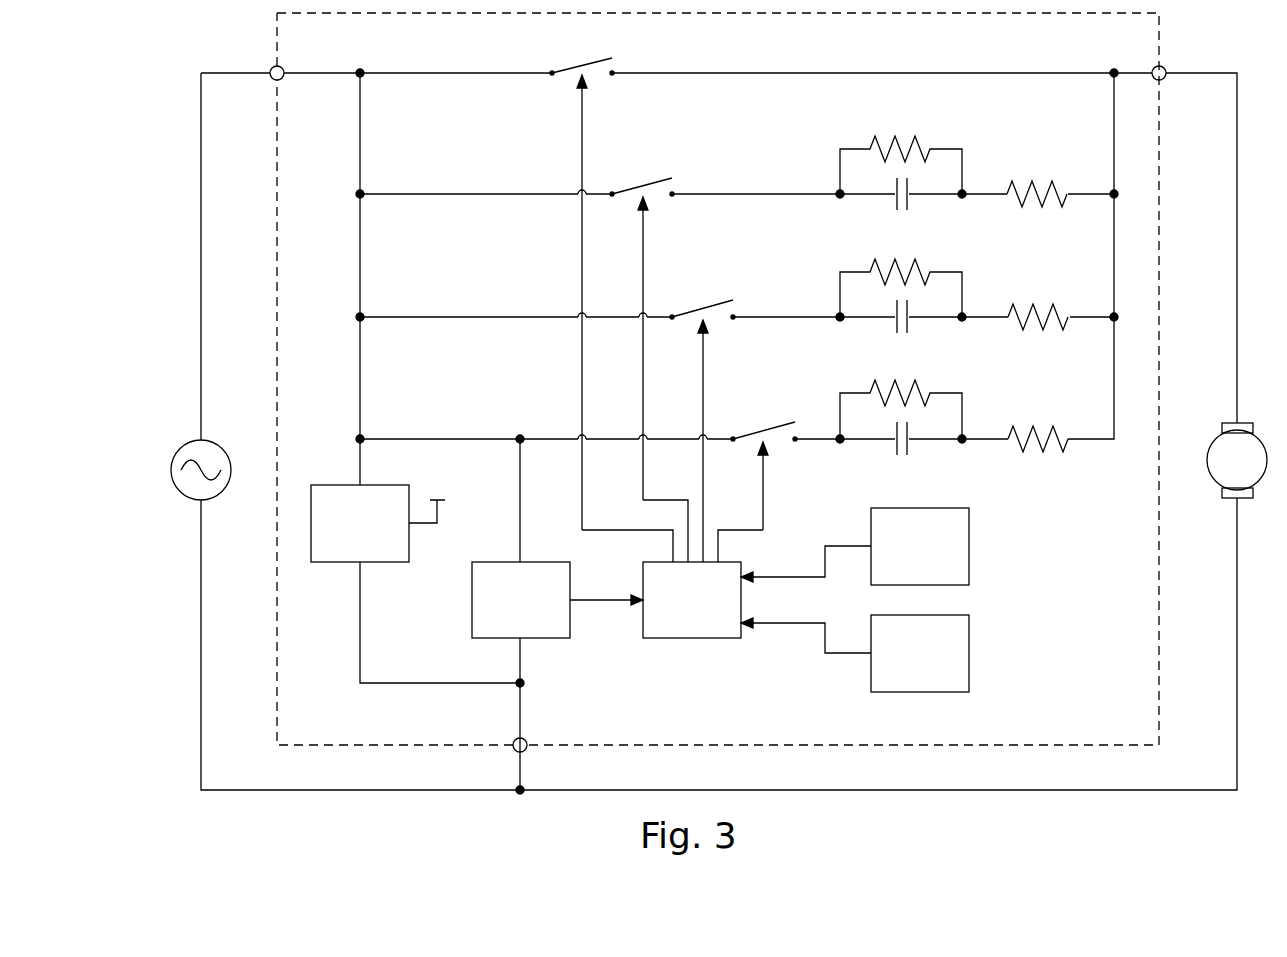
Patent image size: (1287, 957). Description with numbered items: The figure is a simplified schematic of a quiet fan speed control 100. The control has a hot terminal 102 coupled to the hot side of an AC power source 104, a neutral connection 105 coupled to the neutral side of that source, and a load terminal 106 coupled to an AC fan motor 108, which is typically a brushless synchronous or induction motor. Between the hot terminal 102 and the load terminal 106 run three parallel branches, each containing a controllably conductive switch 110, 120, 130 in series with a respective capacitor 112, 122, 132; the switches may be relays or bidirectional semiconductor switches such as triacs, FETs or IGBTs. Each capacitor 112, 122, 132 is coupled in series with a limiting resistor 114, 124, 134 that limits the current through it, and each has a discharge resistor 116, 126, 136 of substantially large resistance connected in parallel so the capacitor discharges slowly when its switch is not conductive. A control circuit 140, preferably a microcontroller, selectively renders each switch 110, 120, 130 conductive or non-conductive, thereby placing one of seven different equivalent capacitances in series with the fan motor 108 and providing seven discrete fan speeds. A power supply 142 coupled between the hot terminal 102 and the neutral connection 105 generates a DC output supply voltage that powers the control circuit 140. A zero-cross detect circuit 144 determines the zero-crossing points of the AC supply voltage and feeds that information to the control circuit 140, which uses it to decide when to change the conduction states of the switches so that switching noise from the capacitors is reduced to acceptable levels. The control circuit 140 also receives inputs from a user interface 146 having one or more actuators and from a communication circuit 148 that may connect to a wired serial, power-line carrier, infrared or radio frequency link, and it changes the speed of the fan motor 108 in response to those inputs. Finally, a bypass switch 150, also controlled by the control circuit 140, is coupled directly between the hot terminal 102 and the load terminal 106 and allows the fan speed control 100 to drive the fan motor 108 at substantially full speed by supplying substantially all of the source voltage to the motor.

The fan speed control 100 is at (275, 268).
The hot terminal 102 is at (289, 68).
The AC power source 104 is at (212, 441).
The neutral connection 105 is at (527, 740).
The load terminal 106 is at (1153, 68).
The fan motor 108 is at (1207, 460).
The controllably conductive switch 110 is at (651, 185).
The capacitor 112 is at (908, 206).
The limiting resistor 114 is at (1050, 185).
The discharge resistor 116 is at (910, 147).
The controllably conductive switch 120 is at (706, 309).
The capacitor 122 is at (908, 326).
The limiting resistor 124 is at (1050, 311).
The discharge resistor 126 is at (893, 269).
The controllably conductive switch 130 is at (776, 429).
The capacitor 132 is at (907, 448).
The limiting resistor 134 is at (1050, 433).
The discharge resistor 136 is at (888, 391).
The control circuit 140 is at (718, 625).
The power supply 142 is at (395, 545).
The zero-cross detect circuit 144 is at (550, 630).
The user interface 146 is at (962, 530).
The communication circuit 148 is at (955, 632).
The bypass switch 150 is at (580, 60).